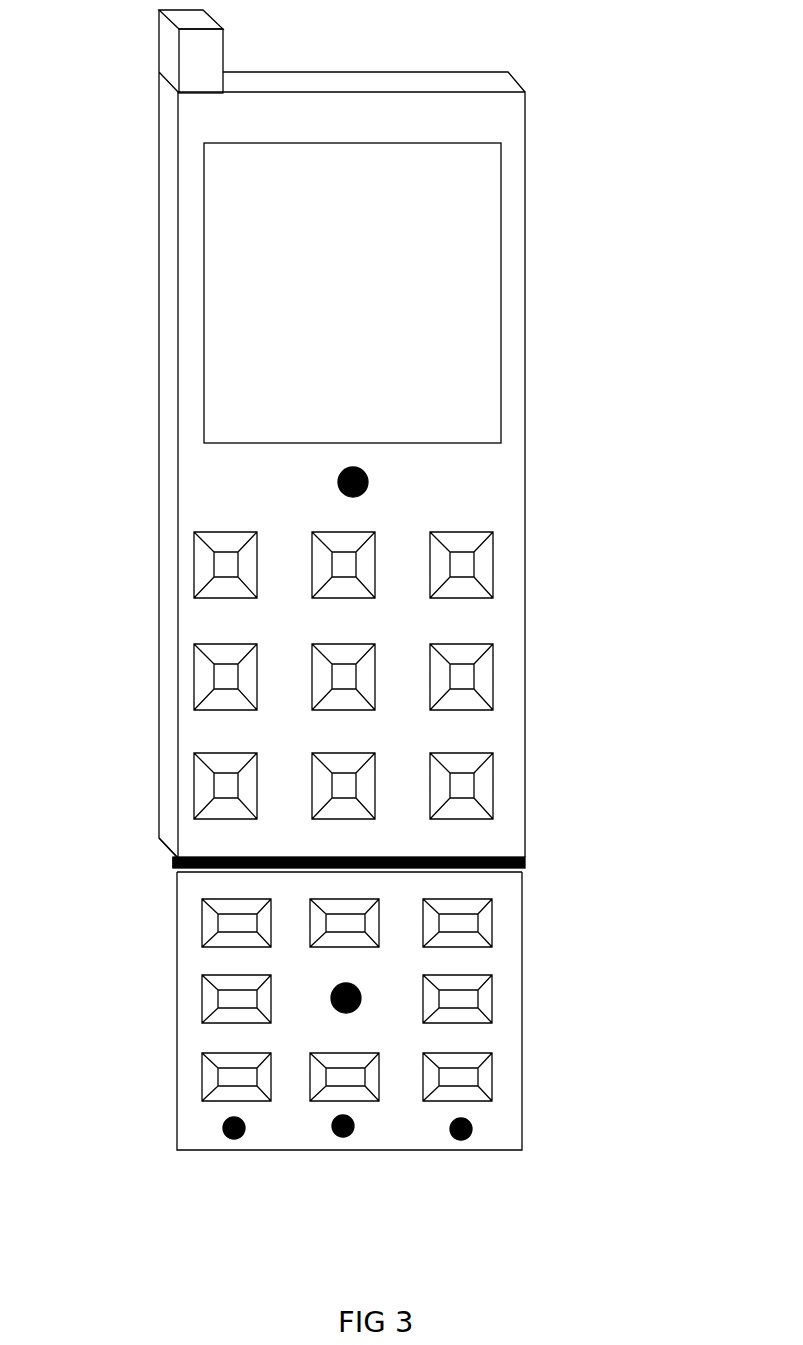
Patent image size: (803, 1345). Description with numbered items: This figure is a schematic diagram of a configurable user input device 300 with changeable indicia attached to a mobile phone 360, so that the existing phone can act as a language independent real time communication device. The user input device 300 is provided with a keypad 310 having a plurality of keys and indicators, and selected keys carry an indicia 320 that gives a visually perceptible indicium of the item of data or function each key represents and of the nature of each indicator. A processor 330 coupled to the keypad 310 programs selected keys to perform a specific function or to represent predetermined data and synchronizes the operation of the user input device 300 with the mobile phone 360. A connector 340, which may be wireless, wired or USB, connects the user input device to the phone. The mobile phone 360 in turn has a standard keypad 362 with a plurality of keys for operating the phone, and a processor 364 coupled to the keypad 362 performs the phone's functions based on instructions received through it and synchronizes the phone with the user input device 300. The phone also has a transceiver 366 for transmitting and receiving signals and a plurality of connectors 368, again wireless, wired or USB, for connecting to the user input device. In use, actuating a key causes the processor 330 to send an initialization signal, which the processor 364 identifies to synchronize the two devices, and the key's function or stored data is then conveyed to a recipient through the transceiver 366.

The configurable user input device 300 is at (535, 1030).
The keypad 310 is at (212, 986).
The indicia 320 is at (187, 927).
The processor 330 is at (314, 1042).
The connector 340 is at (534, 857).
The mobile phone 360 is at (533, 181).
The keypad 362 is at (189, 683).
The processor 364 is at (407, 482).
The transceiver 366 is at (148, 40).
The connectors 368 is at (173, 868).